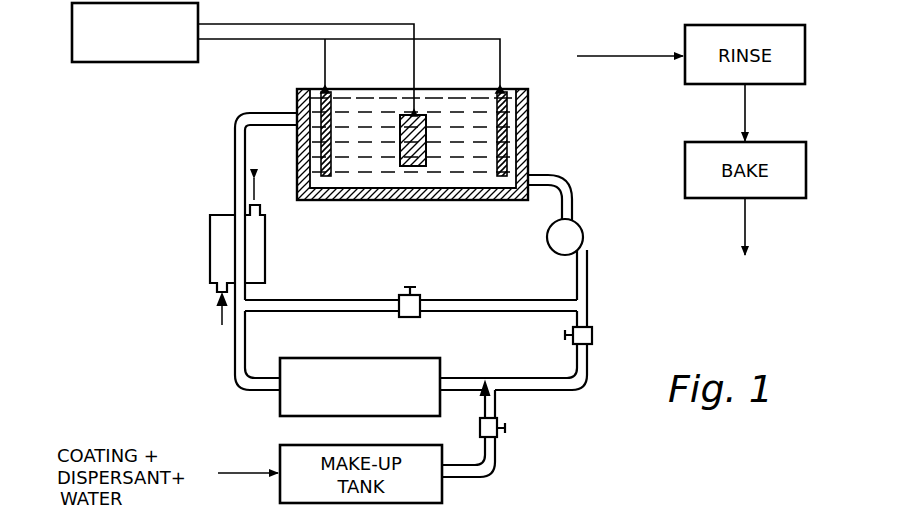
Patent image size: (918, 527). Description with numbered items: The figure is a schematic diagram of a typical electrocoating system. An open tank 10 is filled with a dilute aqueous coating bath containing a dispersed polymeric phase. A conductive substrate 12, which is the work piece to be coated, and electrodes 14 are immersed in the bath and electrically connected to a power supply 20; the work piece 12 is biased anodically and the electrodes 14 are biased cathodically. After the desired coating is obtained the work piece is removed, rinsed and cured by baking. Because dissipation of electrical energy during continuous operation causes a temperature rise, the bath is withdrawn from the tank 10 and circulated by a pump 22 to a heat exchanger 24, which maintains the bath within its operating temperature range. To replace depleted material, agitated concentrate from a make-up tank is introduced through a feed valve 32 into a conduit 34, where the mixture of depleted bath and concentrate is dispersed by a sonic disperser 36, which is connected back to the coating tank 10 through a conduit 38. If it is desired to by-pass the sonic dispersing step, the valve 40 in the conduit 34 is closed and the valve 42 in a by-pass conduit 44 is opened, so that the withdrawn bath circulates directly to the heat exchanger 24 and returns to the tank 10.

The open tank 10 is at (395, 200).
The conductive substrate 12 is at (426, 149).
The electrodes 14 is at (331, 149).
The power supply 20 is at (145, 62).
The pump 22 is at (586, 232).
The heat exchanger 24 is at (265, 250).
The feed valve 32 is at (505, 430).
The conduit 34 is at (533, 356).
The sonic disperser 36 is at (328, 358).
The conduit 38 is at (247, 327).
The valve 40 is at (565, 334).
The valve 42 is at (420, 318).
The by-pass conduit 44 is at (440, 300).